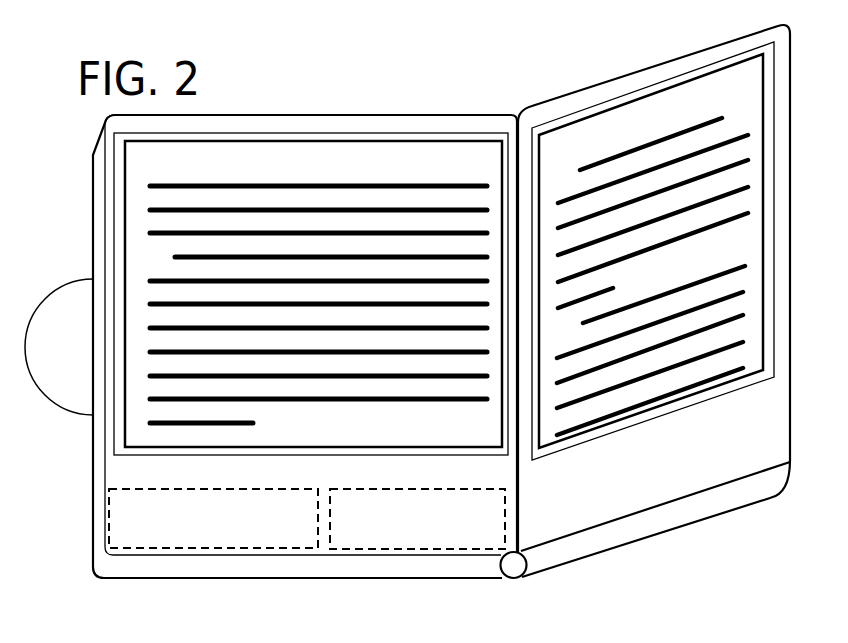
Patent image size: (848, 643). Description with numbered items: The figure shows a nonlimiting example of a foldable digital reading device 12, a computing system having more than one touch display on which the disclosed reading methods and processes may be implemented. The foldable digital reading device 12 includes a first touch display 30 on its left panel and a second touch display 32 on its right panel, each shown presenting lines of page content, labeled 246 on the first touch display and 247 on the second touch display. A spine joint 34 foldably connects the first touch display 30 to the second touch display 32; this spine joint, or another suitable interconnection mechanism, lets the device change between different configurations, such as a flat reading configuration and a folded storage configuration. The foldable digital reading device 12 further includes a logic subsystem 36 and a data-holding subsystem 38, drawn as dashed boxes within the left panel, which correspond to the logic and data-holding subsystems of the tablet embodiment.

The foldable digital reading device 12 is at (402, 90).
The first touch display 30 is at (182, 456).
The second touch display 32 is at (567, 447).
The spine joint 34 is at (515, 581).
The logic subsystem 36 is at (498, 517).
The data-holding subsystem 38 is at (313, 544).
The first page of content 246 is at (312, 285).
The second page of content 247 is at (657, 253).